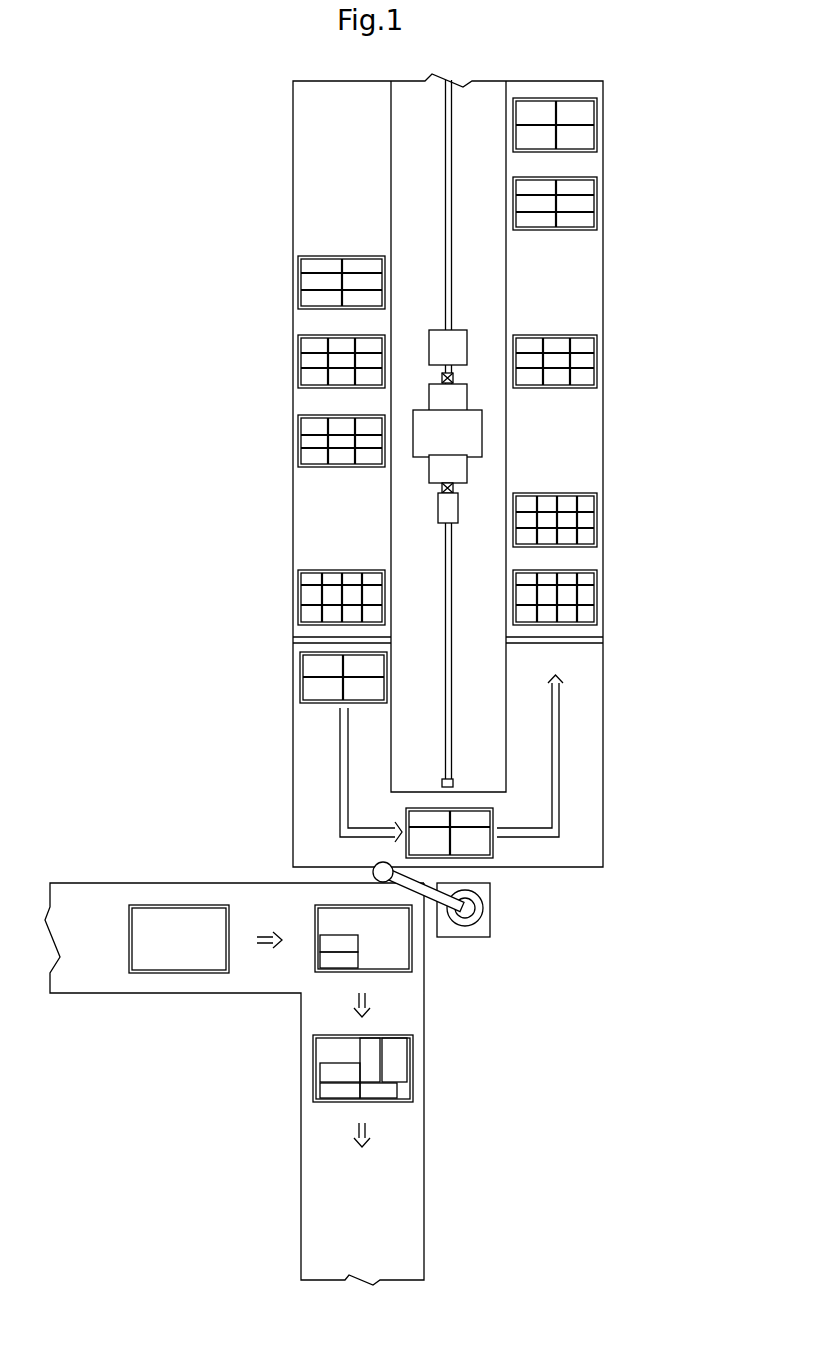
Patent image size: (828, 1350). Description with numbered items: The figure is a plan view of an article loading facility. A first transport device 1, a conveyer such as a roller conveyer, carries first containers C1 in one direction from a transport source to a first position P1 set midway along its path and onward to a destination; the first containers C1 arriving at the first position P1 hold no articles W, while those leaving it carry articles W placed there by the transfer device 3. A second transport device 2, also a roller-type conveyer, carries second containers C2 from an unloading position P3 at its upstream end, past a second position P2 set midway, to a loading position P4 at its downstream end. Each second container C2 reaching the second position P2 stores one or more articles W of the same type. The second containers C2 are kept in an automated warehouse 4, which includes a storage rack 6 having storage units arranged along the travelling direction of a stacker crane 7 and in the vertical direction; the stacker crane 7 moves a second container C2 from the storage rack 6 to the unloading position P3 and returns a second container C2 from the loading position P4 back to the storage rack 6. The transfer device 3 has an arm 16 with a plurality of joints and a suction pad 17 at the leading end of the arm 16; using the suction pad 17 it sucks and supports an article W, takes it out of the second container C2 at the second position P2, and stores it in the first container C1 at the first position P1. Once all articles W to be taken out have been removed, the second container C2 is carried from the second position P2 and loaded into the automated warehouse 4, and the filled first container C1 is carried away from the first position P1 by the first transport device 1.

The first transport device 1 is at (424, 1210).
The second transport device 2 is at (603, 761).
The transfer device 3 is at (493, 907).
The automated warehouse 4 is at (636, 328).
The storage rack 6 is at (603, 423).
The stacker crane 7 is at (482, 440).
The arm 16 is at (427, 912).
The suction pad 17 is at (373, 868).
The first container C1 is at (163, 905).
The second container C2 is at (600, 195).
The article W is at (525, 203).
The first position P1 is at (351, 889).
The second position P2 is at (472, 790).
The unloading position P3 is at (287, 695).
The loading position P4 is at (618, 663).